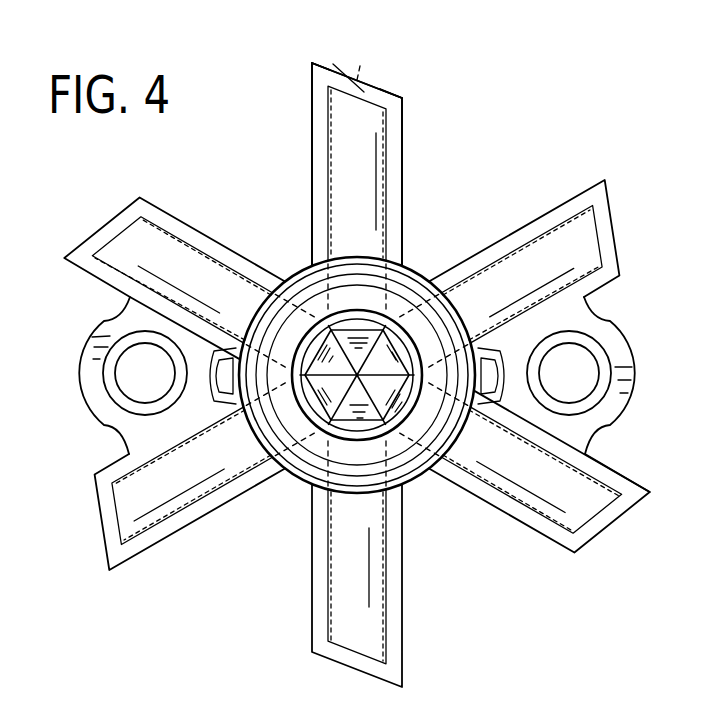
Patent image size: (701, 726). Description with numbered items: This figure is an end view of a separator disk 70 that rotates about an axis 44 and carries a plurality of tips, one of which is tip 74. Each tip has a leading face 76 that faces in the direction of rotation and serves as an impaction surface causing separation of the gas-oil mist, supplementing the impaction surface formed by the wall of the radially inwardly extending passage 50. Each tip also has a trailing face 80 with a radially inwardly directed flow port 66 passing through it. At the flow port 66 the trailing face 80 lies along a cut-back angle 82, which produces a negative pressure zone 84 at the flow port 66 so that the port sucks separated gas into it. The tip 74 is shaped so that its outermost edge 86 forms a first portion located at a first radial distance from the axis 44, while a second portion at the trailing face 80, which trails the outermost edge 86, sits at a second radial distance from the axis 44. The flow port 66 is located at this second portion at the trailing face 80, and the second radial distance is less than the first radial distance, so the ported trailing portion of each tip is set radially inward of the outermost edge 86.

The axis 44 is at (357, 375).
The radially inwardly extending passage 50 is at (337, 233).
The radially inwardly directed flow port 66 is at (363, 93).
The separator disk 70 is at (417, 273).
The tip 74 is at (343, 66).
The leading face 76 is at (313, 128).
The trailing face 80 is at (401, 98).
The cut-back angle 82 is at (350, 62).
The negative pressure zone 84 is at (388, 80).
The outermost edge 86 is at (313, 63).